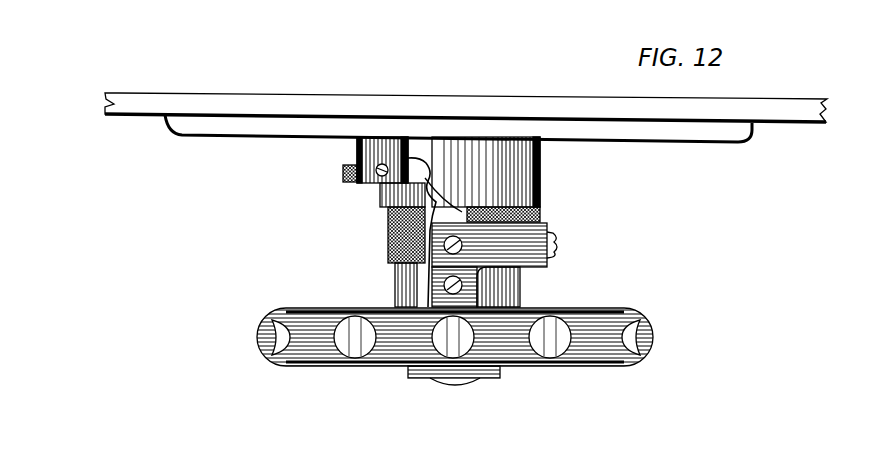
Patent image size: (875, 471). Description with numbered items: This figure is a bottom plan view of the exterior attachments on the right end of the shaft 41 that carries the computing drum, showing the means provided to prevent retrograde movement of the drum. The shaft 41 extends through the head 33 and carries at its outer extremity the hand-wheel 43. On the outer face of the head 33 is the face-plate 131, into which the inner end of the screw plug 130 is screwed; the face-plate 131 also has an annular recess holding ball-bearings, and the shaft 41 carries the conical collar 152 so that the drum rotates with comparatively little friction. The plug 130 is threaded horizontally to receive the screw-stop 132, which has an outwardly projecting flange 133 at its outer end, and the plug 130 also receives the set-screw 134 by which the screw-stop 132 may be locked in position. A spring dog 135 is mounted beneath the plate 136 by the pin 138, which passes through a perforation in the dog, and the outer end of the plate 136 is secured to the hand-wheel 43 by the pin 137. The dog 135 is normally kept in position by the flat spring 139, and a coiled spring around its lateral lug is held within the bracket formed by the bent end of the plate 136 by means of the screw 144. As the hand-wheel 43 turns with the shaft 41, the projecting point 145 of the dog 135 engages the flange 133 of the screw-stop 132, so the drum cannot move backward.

The head 33 is at (795, 107).
The face-plate 131 is at (705, 134).
The screw plug 130 is at (367, 148).
The screw-stop 132 is at (344, 171).
The set-screw 134 is at (374, 185).
The flange 133 is at (431, 178).
The spring dog 135 is at (472, 200).
The projecting point 145 is at (441, 184).
The conical collar 152 is at (388, 222).
The flat spring 139 is at (396, 277).
The plate 136 is at (547, 230).
The screw 144 is at (560, 242).
The pin 137 is at (548, 264).
The pin 138 is at (522, 283).
The hand-wheel 43 is at (591, 318).
The shaft 41 is at (458, 379).